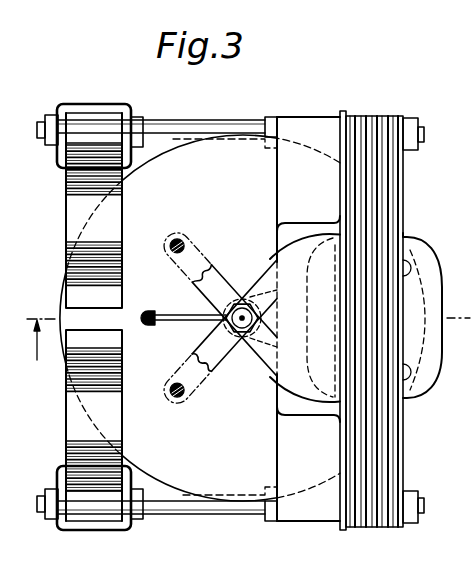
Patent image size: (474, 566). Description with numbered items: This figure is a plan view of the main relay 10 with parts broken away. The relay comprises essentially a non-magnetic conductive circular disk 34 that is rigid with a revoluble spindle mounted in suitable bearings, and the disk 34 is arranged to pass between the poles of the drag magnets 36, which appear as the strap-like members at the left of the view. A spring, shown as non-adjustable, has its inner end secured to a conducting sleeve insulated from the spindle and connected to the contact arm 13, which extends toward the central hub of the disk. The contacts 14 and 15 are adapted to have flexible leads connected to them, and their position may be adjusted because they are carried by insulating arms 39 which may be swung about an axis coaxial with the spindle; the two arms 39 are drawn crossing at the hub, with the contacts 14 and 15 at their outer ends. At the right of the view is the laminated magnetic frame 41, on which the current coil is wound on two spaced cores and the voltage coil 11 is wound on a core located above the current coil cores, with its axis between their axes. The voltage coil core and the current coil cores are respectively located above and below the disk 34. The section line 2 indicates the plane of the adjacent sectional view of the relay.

The section line 2- 2 is at (41, 327).
The main relay 10 is at (301, 107).
The voltage coil 11 is at (440, 262).
The contact arm 13 is at (160, 314).
The contact 14 is at (169, 390).
The contact 15 is at (169, 248).
The non-magnetic conductive circular disk 34 is at (177, 473).
The drag magnets 36 is at (66, 198).
The insulating arms 39 is at (222, 276).
The laminated magnetic frame 41 is at (374, 116).